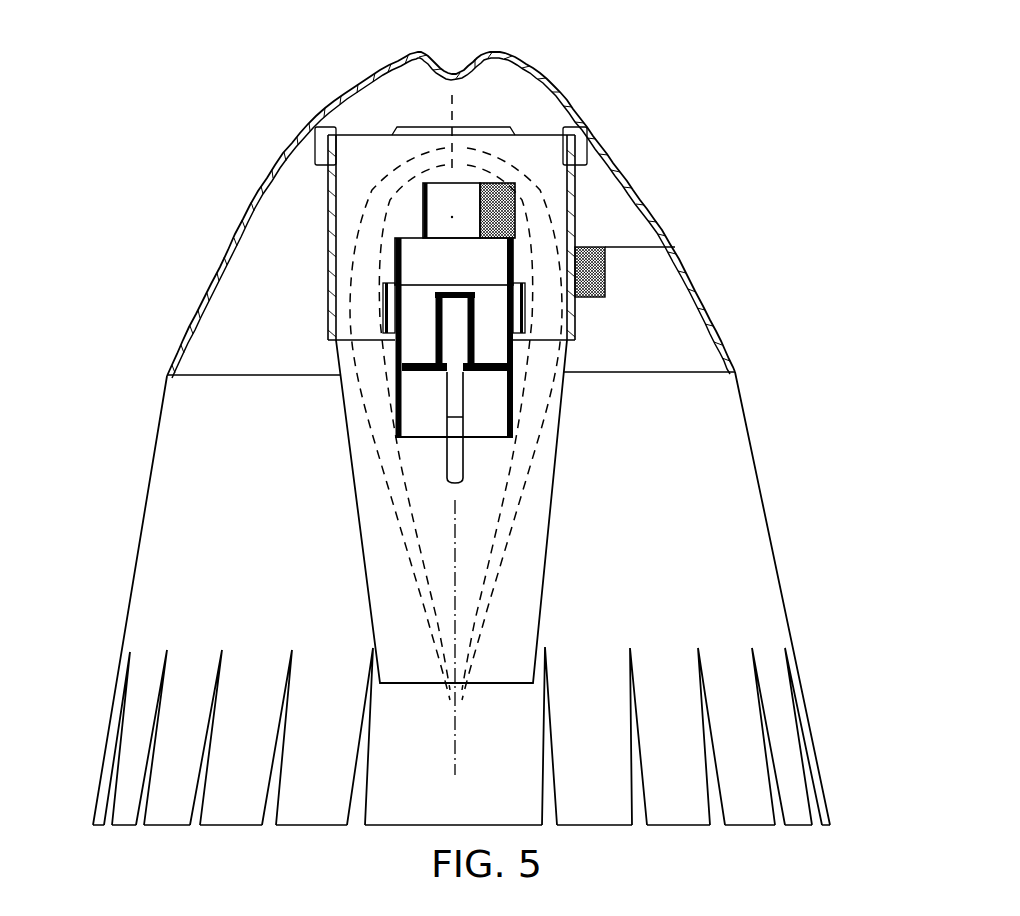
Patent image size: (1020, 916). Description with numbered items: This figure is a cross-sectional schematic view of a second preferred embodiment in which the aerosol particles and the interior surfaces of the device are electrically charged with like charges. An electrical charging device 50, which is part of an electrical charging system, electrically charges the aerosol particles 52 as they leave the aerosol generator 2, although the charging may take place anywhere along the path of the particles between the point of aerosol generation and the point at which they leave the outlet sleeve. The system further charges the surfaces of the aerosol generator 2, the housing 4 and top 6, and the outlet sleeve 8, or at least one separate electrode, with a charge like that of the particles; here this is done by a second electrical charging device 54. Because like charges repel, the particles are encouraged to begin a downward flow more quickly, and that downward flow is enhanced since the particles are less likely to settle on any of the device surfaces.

The aerosol generator 2 is at (413, 268).
The housing 4 is at (323, 208).
The top 6 is at (345, 85).
The outlet sleeve 8 is at (560, 430).
The electrical charging device 50 is at (502, 220).
The aerosol particles 52 is at (520, 173).
The second electrical charging device 54 is at (597, 273).